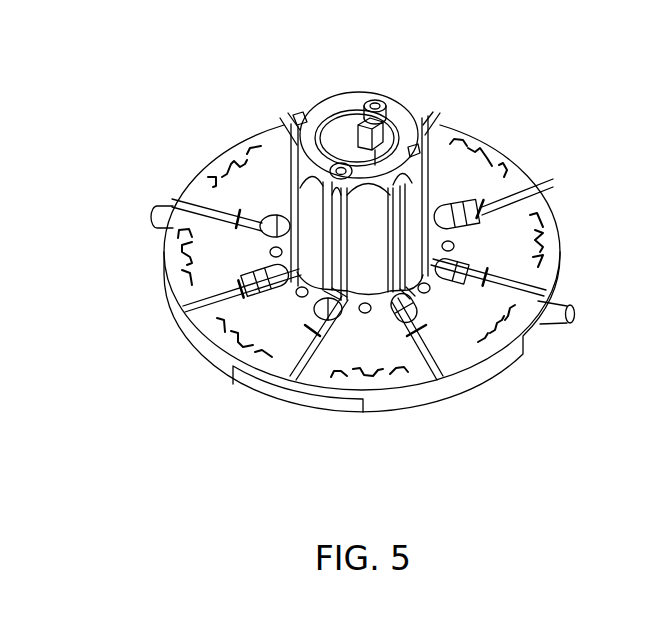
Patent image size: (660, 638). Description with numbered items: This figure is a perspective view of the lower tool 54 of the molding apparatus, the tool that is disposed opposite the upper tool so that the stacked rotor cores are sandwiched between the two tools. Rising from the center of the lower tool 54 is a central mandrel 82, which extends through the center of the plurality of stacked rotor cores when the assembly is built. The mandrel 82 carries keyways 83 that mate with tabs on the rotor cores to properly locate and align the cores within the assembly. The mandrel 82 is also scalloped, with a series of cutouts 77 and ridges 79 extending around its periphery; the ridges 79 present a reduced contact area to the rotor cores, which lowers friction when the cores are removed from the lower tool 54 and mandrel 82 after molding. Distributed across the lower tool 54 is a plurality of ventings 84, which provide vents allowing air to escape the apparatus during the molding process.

The lower tool 54 is at (452, 385).
The cutouts 77 is at (360, 223).
The ridges 79 is at (388, 260).
The central mandrel 82 is at (299, 116).
The keyways 83 is at (333, 255).
The ventings 84 is at (226, 150).